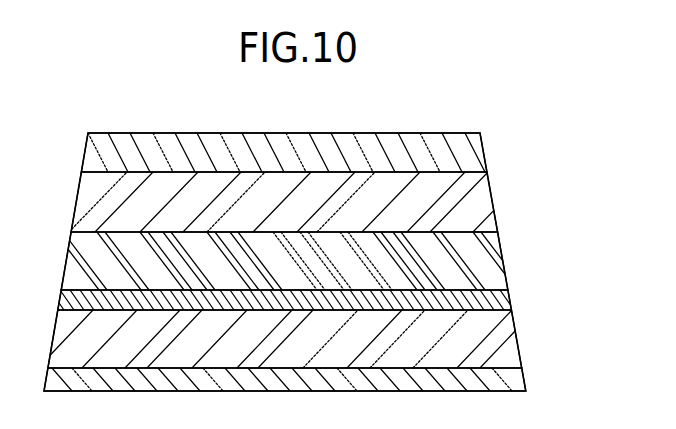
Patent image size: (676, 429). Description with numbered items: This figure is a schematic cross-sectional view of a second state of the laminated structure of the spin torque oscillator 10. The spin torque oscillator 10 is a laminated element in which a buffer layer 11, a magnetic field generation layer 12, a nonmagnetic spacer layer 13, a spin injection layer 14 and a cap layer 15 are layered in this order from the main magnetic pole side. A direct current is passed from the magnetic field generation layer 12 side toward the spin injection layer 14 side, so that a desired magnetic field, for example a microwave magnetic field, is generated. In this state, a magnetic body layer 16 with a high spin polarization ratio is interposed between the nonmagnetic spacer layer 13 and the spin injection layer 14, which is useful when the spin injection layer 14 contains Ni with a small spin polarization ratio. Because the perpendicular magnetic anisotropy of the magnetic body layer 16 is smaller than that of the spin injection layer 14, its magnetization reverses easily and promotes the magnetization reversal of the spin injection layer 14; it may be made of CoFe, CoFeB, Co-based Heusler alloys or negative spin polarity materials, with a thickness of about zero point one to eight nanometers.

The spin torque oscillator 10 is at (478, 112).
The buffer layer 11 is at (503, 378).
The magnetic field generation layer 12 is at (498, 343).
The nonmagnetic spacer layer 13 is at (492, 302).
The spin injection layer 14 is at (480, 198).
The cap layer 15 is at (472, 152).
The magnetic body layer 16 is at (485, 257).